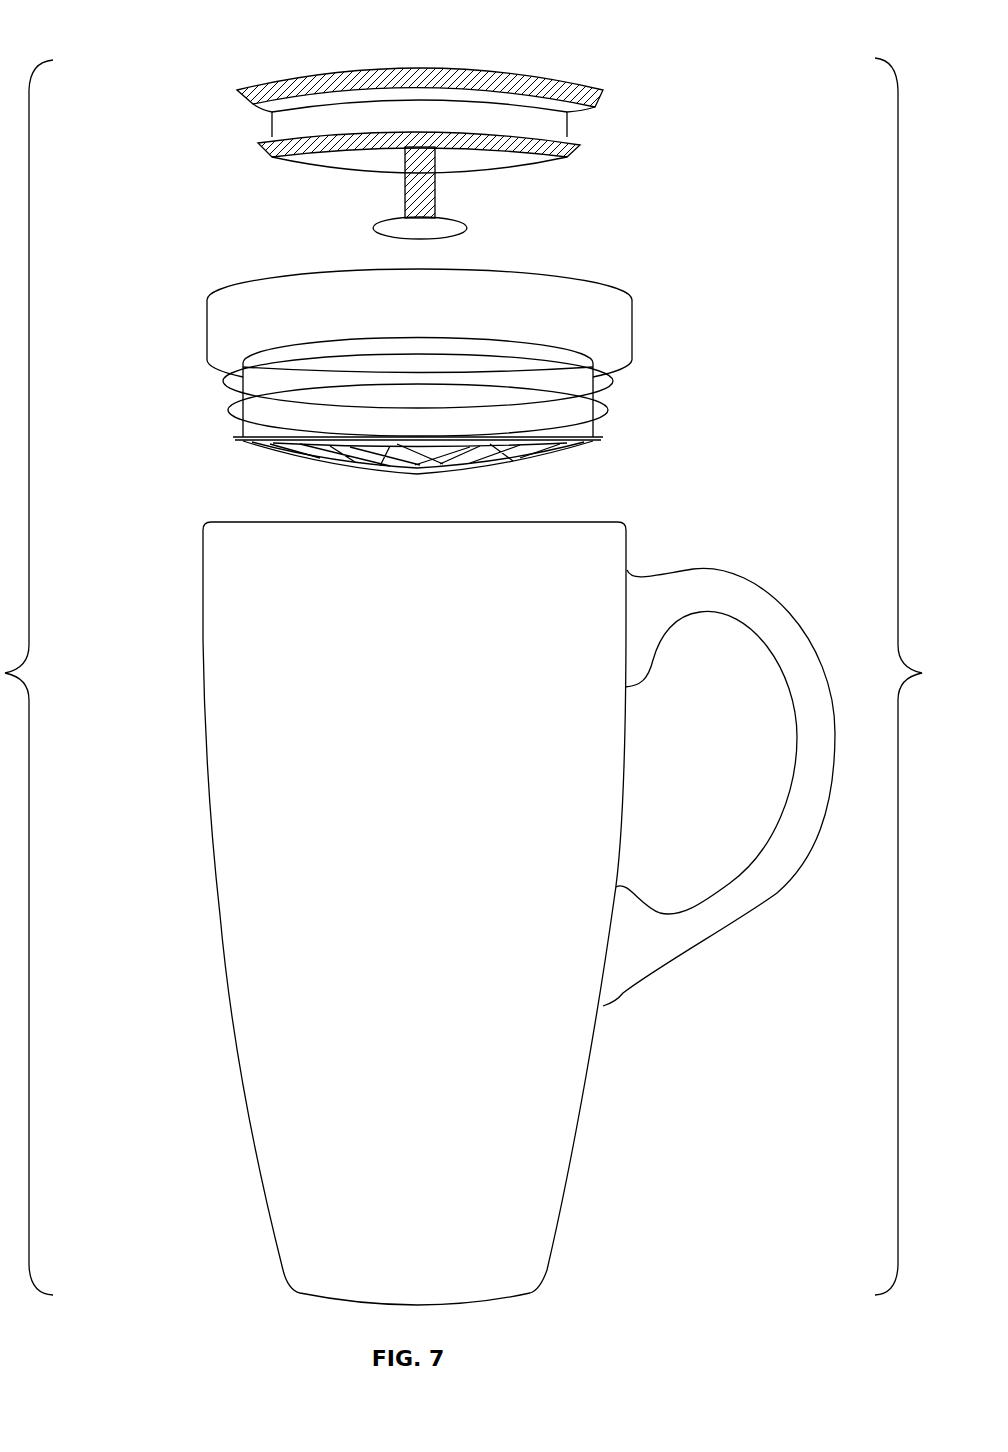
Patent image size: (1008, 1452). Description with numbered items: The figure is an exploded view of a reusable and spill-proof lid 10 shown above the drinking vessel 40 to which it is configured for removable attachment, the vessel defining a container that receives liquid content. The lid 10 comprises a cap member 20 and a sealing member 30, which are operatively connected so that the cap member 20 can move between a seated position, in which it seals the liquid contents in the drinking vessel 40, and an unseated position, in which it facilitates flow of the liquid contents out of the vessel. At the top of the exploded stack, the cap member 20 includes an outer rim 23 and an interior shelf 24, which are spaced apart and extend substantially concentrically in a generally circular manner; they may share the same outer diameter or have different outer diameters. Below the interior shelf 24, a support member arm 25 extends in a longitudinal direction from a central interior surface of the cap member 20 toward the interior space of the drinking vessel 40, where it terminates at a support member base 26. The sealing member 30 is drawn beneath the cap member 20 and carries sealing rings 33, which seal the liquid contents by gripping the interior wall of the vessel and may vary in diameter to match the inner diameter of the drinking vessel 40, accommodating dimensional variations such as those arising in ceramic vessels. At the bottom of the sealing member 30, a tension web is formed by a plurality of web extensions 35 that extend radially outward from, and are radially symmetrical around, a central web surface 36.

The lid 10 is at (146, 211).
The cap member 20 is at (470, 128).
The outer rim 23 is at (603, 90).
The interior shelf 24 is at (580, 150).
The support member arm 25 is at (436, 200).
The support member base 26 is at (468, 228).
The sealing member 30 is at (422, 362).
The sealing rings 33 is at (225, 384).
The web extensions 35 is at (502, 460).
The central web surface 36 is at (420, 477).
The drinking vessel 40 is at (242, 758).